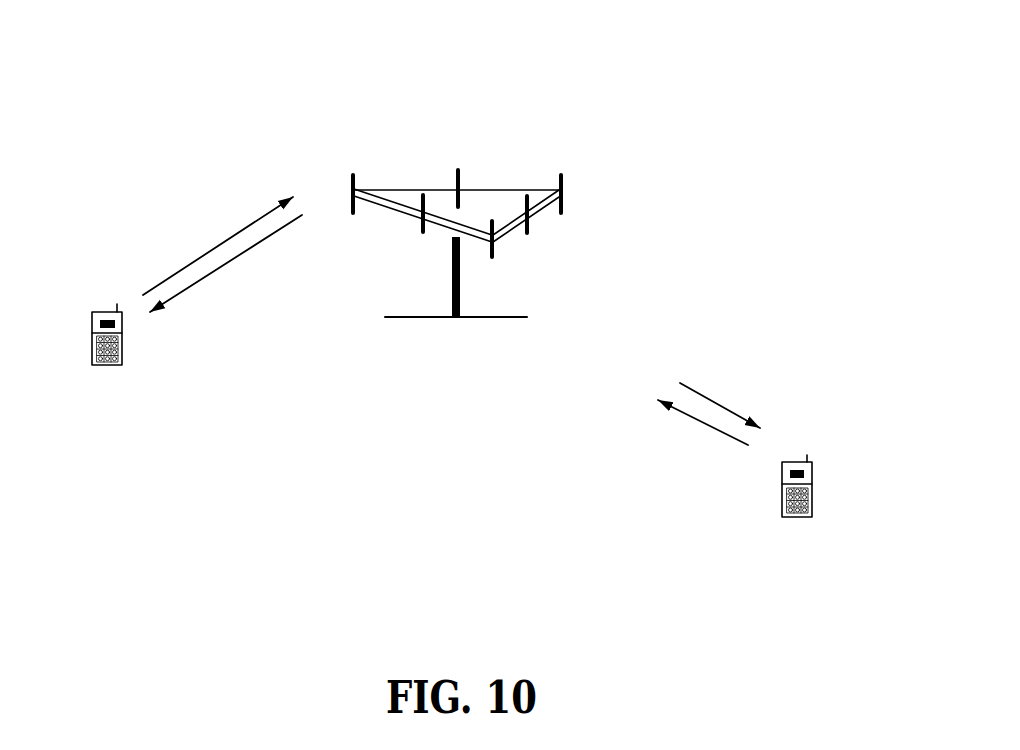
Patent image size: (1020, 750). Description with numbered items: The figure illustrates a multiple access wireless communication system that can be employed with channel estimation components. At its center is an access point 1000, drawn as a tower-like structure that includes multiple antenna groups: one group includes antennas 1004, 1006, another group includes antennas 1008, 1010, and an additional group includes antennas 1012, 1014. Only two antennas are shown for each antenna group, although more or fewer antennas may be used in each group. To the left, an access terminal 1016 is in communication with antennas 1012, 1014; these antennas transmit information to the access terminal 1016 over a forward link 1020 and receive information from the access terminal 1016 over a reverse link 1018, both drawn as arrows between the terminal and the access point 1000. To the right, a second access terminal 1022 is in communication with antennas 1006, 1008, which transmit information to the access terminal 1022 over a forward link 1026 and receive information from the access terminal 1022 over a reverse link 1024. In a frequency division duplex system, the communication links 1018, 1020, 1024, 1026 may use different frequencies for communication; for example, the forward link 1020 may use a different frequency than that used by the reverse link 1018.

The access point 1000 is at (433, 320).
The antenna 1004 is at (493, 257).
The antenna 1006 is at (530, 233).
The antenna 1008 is at (567, 207).
The antenna 1010 is at (462, 172).
The antenna 1012 is at (356, 185).
The antenna 1014 is at (423, 232).
The access terminal 1016 is at (110, 311).
The reverse link 1018 is at (213, 243).
The forward link 1020 is at (233, 262).
The access terminal 1022 is at (797, 462).
The reverse link 1024 is at (690, 415).
The forward link 1026 is at (723, 407).